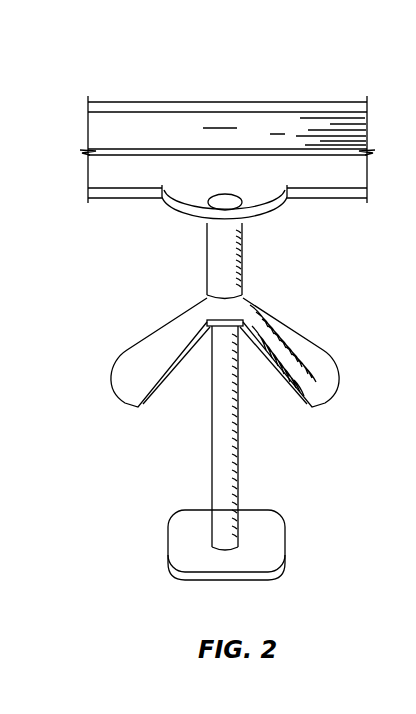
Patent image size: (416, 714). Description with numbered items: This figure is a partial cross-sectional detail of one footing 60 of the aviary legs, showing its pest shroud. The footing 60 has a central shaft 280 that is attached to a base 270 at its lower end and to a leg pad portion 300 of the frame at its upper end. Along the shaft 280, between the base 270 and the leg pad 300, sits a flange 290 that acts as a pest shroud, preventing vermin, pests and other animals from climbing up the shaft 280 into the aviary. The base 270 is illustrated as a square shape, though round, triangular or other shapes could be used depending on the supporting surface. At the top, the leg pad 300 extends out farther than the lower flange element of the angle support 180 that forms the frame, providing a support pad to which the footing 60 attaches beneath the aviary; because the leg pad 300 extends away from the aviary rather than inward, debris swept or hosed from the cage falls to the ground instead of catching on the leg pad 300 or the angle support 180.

The footing 60 is at (333, 74).
The angle support 180 is at (123, 125).
The leg pad portion 300 is at (267, 197).
The flange 290 is at (292, 343).
The central shaft 280 is at (232, 472).
The base 270 is at (270, 540).